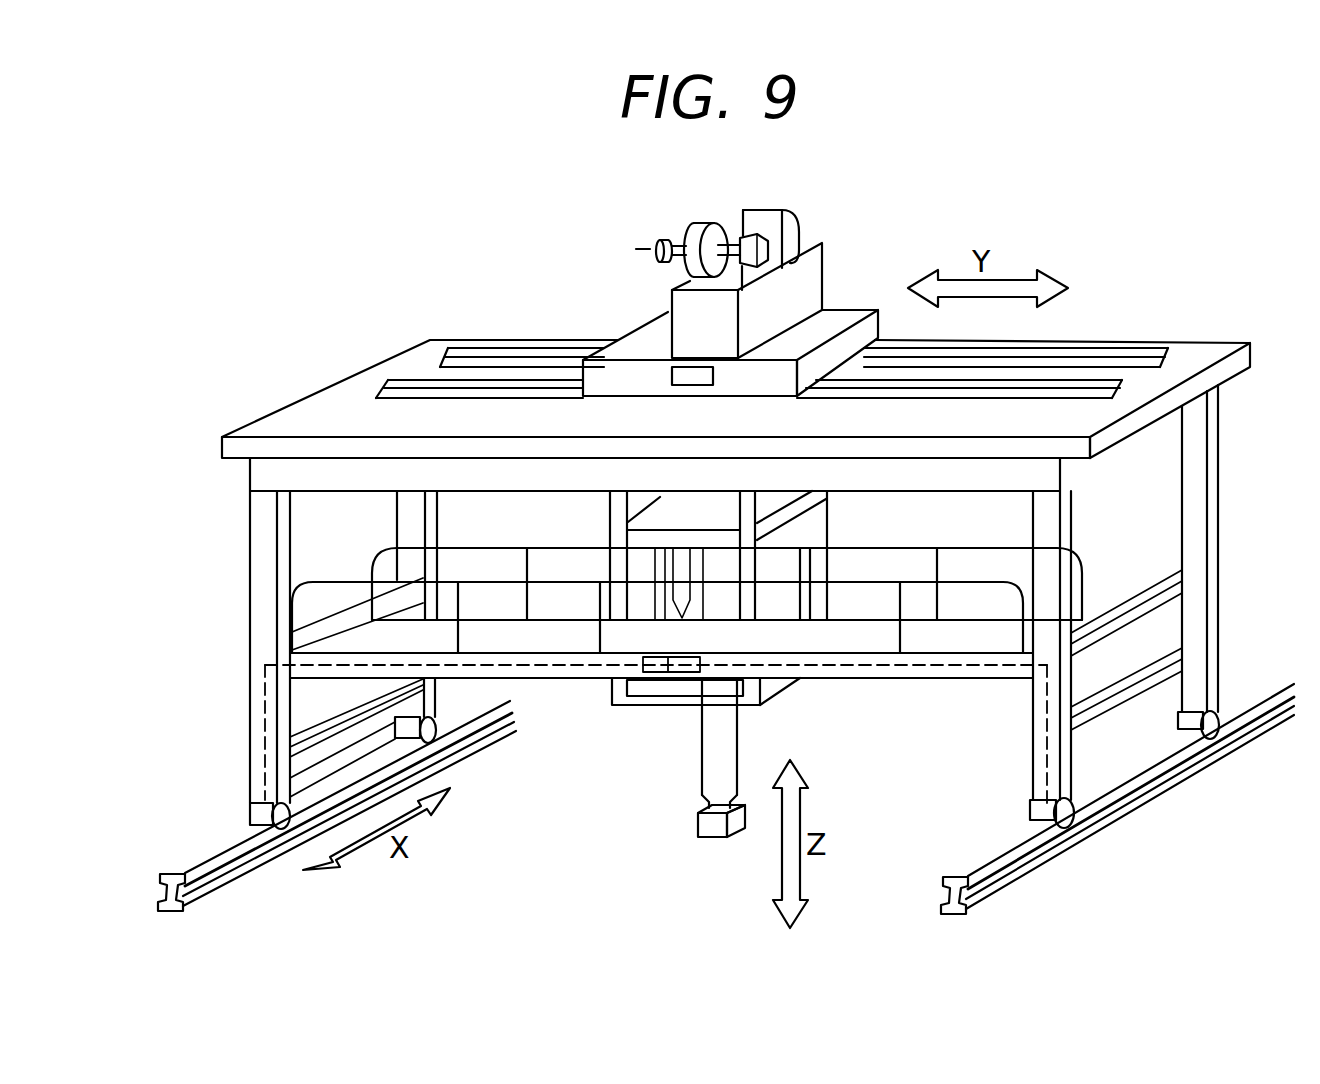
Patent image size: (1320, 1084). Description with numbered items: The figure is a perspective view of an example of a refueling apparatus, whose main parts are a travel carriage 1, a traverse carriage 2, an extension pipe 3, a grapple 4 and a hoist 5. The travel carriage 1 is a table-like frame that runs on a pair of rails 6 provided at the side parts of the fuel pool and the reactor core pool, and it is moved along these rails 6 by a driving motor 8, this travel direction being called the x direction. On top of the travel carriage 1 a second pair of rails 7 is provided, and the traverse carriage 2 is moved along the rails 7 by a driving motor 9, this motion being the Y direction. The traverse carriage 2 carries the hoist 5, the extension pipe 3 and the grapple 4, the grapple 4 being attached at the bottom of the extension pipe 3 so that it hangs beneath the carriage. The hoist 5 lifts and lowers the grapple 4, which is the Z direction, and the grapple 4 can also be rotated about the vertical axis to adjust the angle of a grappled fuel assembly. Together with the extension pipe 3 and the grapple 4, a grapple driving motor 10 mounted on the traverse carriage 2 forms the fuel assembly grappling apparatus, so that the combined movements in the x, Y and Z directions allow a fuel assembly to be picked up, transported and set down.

The travel carriage 1 is at (260, 597).
The traverse carriage 2 is at (636, 346).
The extension pipe 3 is at (732, 736).
The grapple 4 is at (705, 827).
The hoist 5 is at (701, 225).
The rails 6 is at (218, 873).
The rails 7 is at (447, 355).
The driving motor 8 is at (643, 700).
The driving motor 9 is at (677, 374).
The grapple driving motor 10 is at (786, 221).